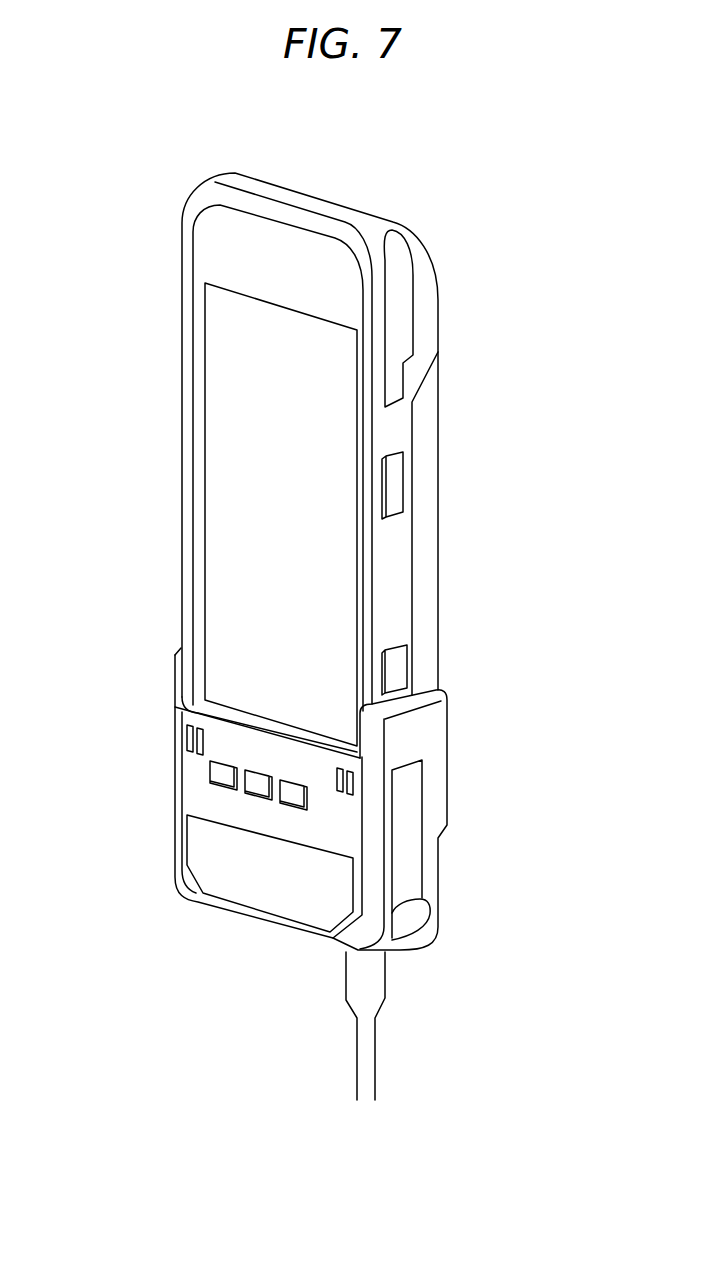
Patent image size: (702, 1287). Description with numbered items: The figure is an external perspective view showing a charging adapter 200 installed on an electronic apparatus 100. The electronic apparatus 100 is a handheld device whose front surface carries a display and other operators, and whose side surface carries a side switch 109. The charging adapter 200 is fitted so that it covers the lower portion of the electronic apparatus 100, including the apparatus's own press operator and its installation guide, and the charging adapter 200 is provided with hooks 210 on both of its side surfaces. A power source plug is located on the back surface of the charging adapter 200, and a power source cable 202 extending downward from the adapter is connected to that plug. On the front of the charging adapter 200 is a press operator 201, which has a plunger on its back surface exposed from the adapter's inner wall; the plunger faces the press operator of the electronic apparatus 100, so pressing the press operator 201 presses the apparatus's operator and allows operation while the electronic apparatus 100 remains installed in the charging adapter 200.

The electronic apparatus 100 is at (300, 270).
The side switch 109 is at (398, 478).
The charging adapter 200 is at (417, 730).
The press operator 201 is at (215, 775).
The hook 210 is at (410, 797).
The power source cable 202 is at (375, 997).